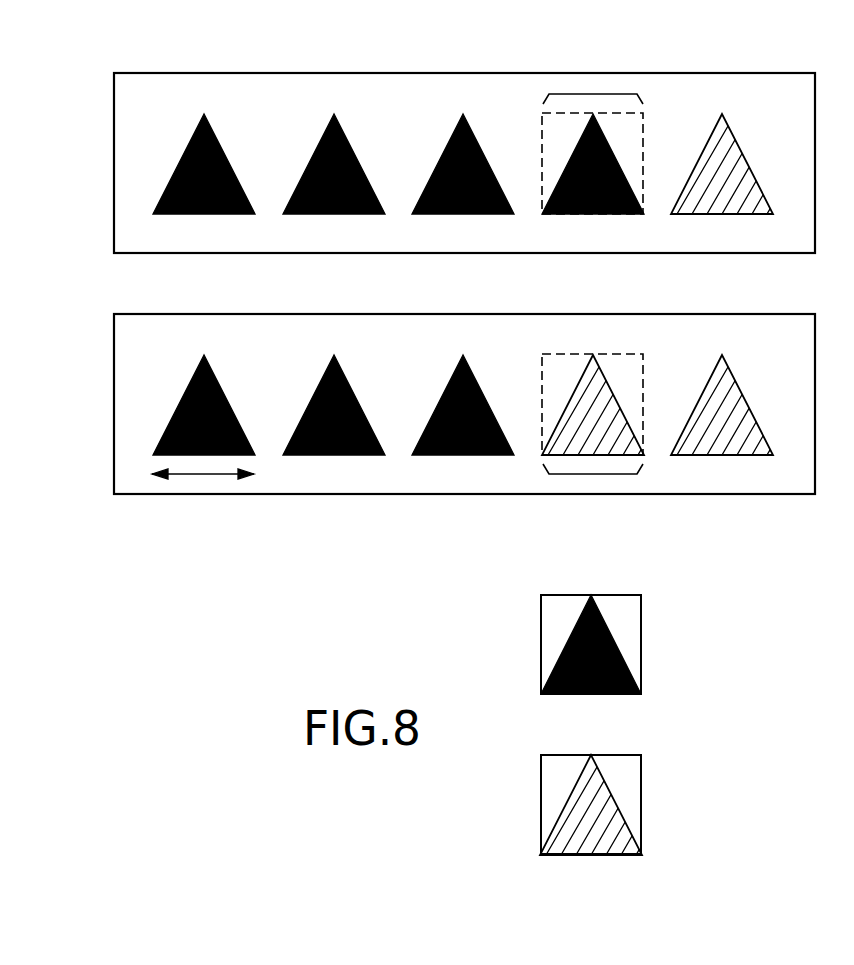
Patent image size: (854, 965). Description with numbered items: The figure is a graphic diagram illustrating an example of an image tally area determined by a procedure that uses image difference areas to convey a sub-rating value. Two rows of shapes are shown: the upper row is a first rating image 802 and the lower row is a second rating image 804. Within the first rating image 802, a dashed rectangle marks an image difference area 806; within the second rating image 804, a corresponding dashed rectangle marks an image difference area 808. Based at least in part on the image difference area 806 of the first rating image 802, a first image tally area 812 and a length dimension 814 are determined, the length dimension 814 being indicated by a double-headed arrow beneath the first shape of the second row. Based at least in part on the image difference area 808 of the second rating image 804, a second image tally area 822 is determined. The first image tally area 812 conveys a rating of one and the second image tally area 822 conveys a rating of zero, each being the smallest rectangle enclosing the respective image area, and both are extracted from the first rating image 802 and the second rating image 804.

The first rating image 802 is at (423, 138).
The second rating image 804 is at (423, 430).
The image difference area 806 is at (592, 92).
The image difference area 808 is at (592, 472).
The first image tally area 812 is at (540, 645).
The length dimension 814 is at (200, 472).
The second image tally area 822 is at (540, 804).